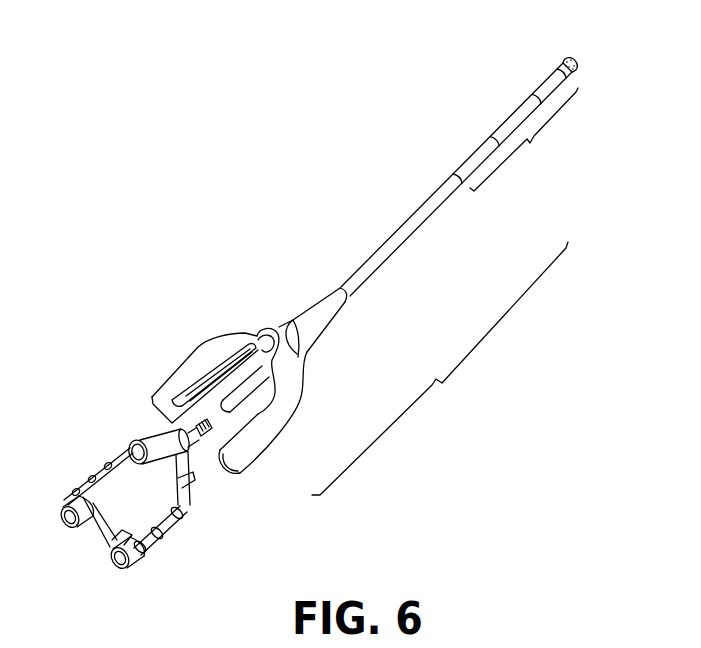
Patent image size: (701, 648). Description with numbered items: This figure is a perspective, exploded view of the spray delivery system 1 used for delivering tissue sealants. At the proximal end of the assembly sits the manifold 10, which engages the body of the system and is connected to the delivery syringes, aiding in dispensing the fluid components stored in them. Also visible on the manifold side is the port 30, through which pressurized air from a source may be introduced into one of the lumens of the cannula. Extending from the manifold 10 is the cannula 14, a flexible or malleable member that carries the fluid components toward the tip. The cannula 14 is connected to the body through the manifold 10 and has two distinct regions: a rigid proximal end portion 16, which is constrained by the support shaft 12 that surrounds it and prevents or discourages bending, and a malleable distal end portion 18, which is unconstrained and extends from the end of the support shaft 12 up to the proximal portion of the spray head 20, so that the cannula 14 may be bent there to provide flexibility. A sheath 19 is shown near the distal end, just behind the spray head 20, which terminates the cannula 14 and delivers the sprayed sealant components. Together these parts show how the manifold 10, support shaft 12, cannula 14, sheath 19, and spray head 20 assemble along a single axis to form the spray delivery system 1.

The spray delivery system 1 is at (305, 411).
The manifold 10 is at (147, 510).
The support shaft 12 is at (433, 238).
The cannula 14 is at (464, 150).
The proximal end portion 16 is at (440, 368).
The distal end portion 18 is at (524, 139).
The sheath 19 is at (537, 68).
The spray head 20 is at (578, 66).
The port 30 is at (183, 499).